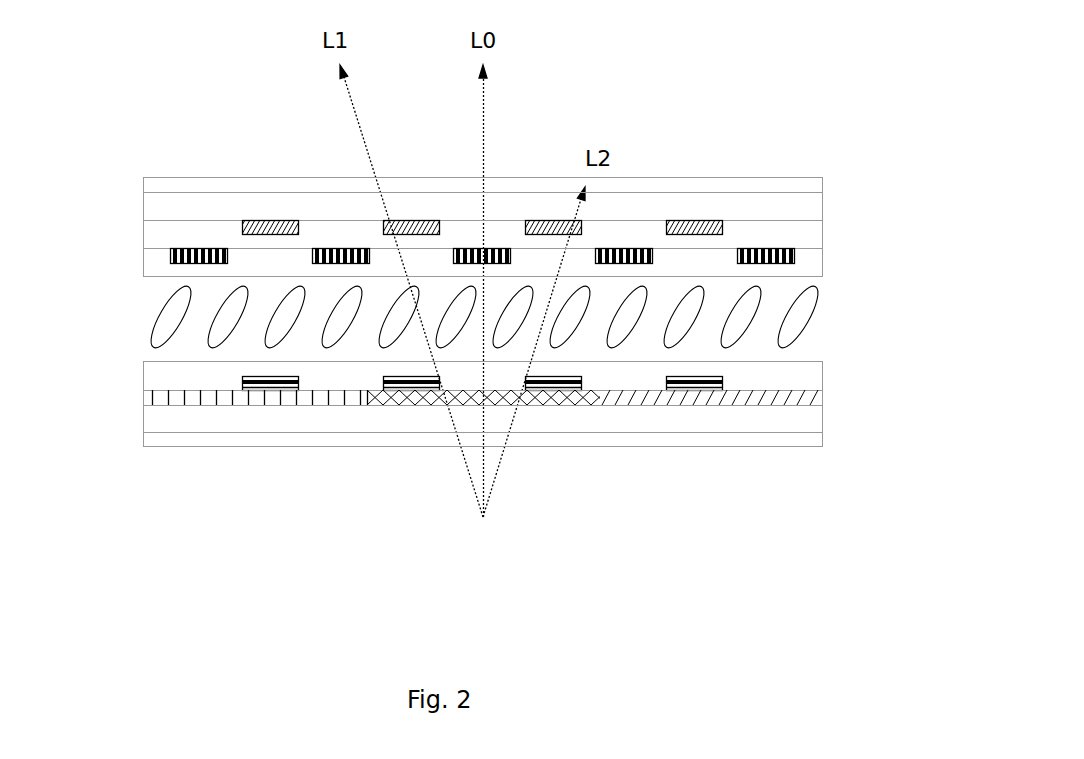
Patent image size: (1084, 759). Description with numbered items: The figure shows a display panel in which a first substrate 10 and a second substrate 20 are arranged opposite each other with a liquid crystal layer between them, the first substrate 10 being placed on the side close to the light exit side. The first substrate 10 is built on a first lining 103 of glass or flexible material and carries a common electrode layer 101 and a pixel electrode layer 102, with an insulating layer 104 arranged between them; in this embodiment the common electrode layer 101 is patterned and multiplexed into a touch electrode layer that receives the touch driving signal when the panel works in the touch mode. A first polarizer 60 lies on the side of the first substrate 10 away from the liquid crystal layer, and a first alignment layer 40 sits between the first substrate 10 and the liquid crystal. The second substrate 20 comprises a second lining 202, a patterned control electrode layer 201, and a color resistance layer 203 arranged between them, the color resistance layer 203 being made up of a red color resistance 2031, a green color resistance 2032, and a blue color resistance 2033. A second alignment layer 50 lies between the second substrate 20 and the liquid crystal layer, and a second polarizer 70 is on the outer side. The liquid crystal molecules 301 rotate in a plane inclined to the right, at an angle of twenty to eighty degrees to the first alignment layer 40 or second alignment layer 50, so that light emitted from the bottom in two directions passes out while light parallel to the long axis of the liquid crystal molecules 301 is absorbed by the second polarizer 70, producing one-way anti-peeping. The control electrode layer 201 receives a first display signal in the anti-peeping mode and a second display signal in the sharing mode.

The first substrate 10 is at (133, 200).
The first polarizer 60 is at (725, 177).
The first lining 103 is at (822, 207).
The common electrode layer 101 is at (725, 228).
The insulating layer 104 is at (822, 237).
The first alignment layer 40 is at (143, 262).
The pixel electrode layer 102 is at (793, 257).
The liquid crystal molecules 301 is at (812, 322).
The second substrate 20 is at (125, 382).
The second alignment layer 50 is at (143, 372).
The control electrode layer 201 is at (723, 382).
The color resistance layer 203 is at (278, 505).
The blue color resistance 2033 is at (245, 405).
The green color resistance 2032 is at (572, 405).
The red color resistance 2031 is at (728, 405).
The second lining 202 is at (822, 418).
The second polarizer 70 is at (822, 437).